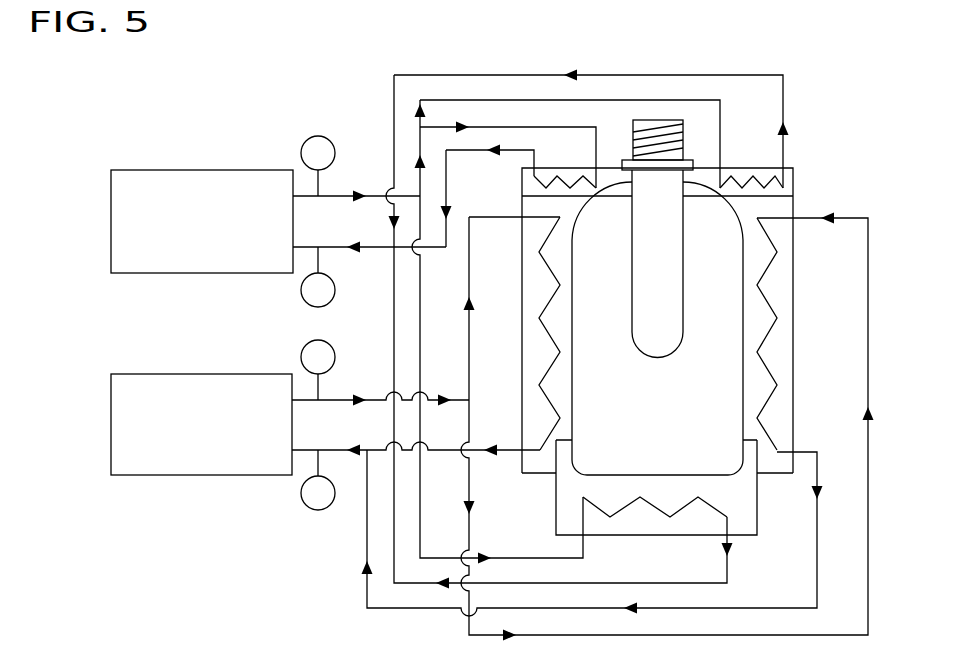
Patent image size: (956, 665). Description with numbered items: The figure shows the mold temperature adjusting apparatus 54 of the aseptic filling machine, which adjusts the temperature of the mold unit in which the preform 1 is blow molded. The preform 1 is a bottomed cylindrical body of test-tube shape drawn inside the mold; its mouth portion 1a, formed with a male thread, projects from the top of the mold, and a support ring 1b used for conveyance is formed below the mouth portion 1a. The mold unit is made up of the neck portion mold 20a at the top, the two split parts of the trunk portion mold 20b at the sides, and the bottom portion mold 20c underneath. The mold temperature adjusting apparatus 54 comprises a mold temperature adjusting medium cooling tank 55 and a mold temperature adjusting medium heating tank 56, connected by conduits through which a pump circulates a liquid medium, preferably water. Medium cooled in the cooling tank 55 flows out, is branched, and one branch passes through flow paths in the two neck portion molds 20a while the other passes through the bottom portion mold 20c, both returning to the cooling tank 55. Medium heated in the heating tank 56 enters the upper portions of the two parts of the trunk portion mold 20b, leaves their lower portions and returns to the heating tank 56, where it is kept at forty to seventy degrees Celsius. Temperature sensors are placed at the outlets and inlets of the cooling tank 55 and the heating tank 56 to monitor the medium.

The preform 1 is at (700, 257).
The mouth portion 1a is at (685, 126).
The support ring 1b is at (684, 207).
The neck portion mold 20a is at (612, 167).
The trunk portion mold 20b is at (528, 475).
The bottom portion mold 20c is at (747, 535).
The mold temperature adjusting apparatus 54 is at (104, 340).
The mold temperature adjusting medium cooling tank 55 is at (205, 170).
The mold temperature adjusting medium heating tank 56 is at (205, 475).